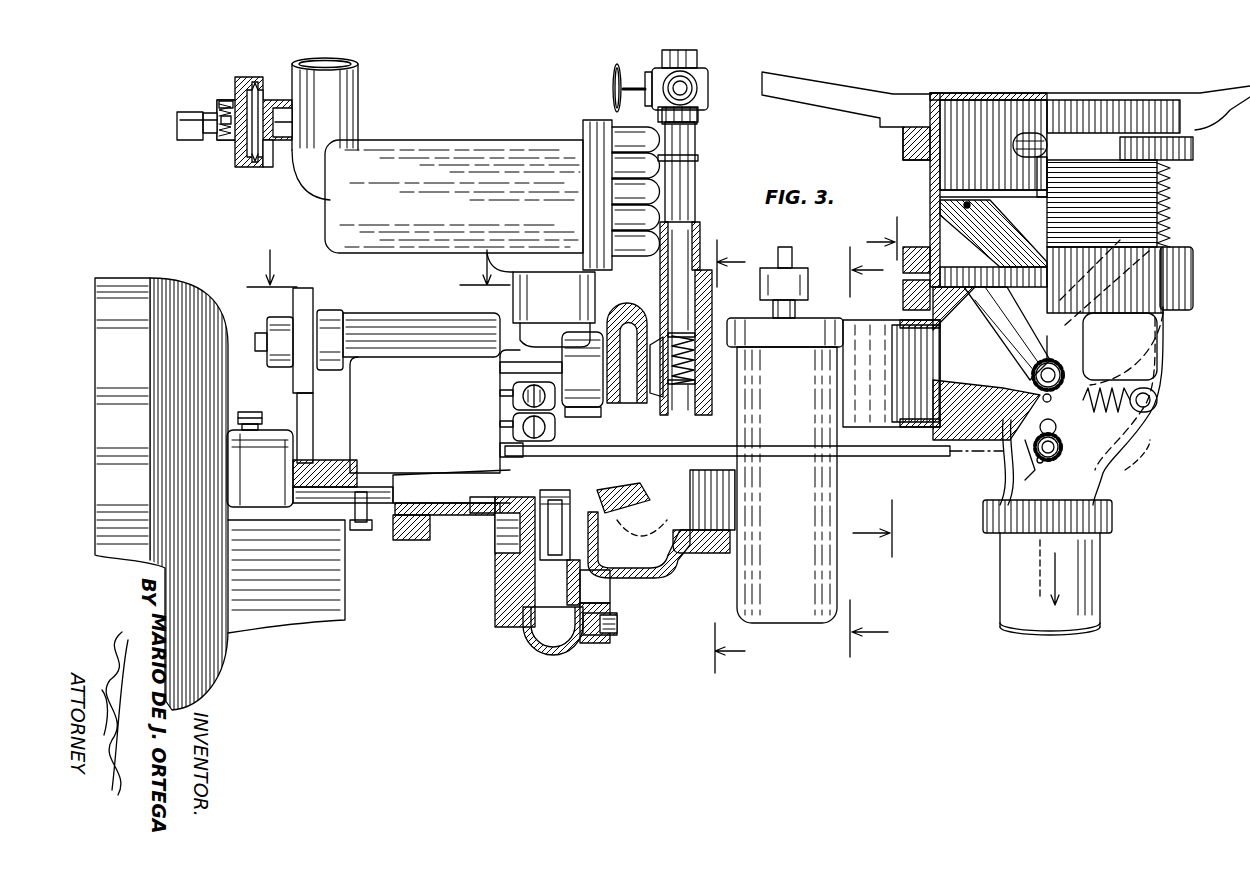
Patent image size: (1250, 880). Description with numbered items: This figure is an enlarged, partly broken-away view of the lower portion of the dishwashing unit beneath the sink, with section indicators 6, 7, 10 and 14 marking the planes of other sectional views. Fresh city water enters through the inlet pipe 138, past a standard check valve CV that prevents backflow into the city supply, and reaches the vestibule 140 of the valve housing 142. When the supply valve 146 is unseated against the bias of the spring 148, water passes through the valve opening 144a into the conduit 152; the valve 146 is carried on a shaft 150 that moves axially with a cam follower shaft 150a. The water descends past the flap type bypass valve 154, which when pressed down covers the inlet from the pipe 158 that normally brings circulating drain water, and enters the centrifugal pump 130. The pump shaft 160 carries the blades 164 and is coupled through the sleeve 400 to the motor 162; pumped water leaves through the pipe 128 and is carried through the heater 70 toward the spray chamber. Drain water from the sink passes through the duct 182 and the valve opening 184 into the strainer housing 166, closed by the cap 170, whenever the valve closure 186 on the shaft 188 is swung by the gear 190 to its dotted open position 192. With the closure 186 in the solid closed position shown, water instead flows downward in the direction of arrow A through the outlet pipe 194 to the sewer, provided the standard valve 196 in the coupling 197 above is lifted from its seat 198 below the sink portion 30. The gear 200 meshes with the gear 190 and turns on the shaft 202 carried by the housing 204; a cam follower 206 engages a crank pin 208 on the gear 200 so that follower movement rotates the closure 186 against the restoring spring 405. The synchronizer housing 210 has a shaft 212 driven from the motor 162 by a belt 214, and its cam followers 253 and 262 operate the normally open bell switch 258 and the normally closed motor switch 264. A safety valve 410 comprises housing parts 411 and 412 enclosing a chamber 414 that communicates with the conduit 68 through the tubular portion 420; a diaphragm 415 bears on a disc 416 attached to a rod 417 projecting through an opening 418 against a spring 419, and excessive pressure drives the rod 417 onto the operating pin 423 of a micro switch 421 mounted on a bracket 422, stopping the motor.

The section line 6- 6 is at (880, 387).
The section line 7- 7 is at (862, 452).
The section line 10- 10 is at (731, 456).
The section line 14- 14 is at (378, 279).
The frame member 30 is at (835, 102).
The conduit 68 is at (355, 100).
The heater 70 is at (500, 150).
The pipe 128 is at (570, 307).
The pump 130 is at (580, 650).
The water inlet pipe 138 is at (688, 238).
The vestibule 140 is at (703, 322).
The valve housing 142 is at (610, 325).
The valve opening 144a is at (587, 369).
The fresh water supply valve 146 is at (657, 398).
The spring 148 is at (714, 385).
The shaft 150 is at (560, 367).
The cam follower shaft 150a is at (512, 350).
The conduit 152 is at (605, 397).
The flap type bypass valve 154 is at (663, 532).
The pipe 158 is at (700, 553).
The shaft 160 is at (496, 510).
The motor 162 is at (185, 273).
The blades 164 is at (575, 566).
The strainer housing 166 is at (830, 496).
The cap 170 is at (808, 320).
The duct 182 is at (910, 322).
The valve opening 184 is at (1005, 382).
The valve closure 186 is at (1005, 345).
The shaft 188 is at (1045, 360).
The gear 190 is at (1062, 368).
The open position 192 is at (1115, 320).
The outlet conduit 194 is at (1100, 556).
The valve 196 is at (995, 222).
The coupling 197 is at (1160, 165).
The valve seat 198 is at (993, 244).
The gear 200 is at (1063, 450).
The shaft 202 is at (1058, 428).
The housing 204 is at (1125, 470).
The cam follower 206 is at (900, 457).
The crank pin 208 is at (1048, 465).
The synchronizer housing 210 is at (434, 400).
The shaft 212 is at (261, 352).
The belt 214 is at (310, 405).
The cam follower 253 is at (513, 400).
The normally open switch 258 is at (513, 388).
The cam follower 262 is at (513, 430).
The normally closed switch 264 is at (500, 448).
The sleeve 400 is at (337, 462).
The restoring spring 405 is at (1147, 392).
The safety valve 410 is at (219, 137).
The first housing part 411 is at (238, 82).
The second housing part 412 is at (280, 62).
The chamber 414 is at (272, 163).
The diaphragm member 415 is at (248, 160).
The disc 416 is at (232, 93).
The rod 417 is at (212, 130).
The opening 418 is at (222, 138).
The spring 419 is at (218, 103).
The conduit 420 is at (296, 120).
The micro switch 421 is at (180, 128).
The bracket 422 is at (205, 135).
The operating pin 423 is at (219, 112).
The arrow A is at (1052, 556).
The check valve CV is at (708, 95).